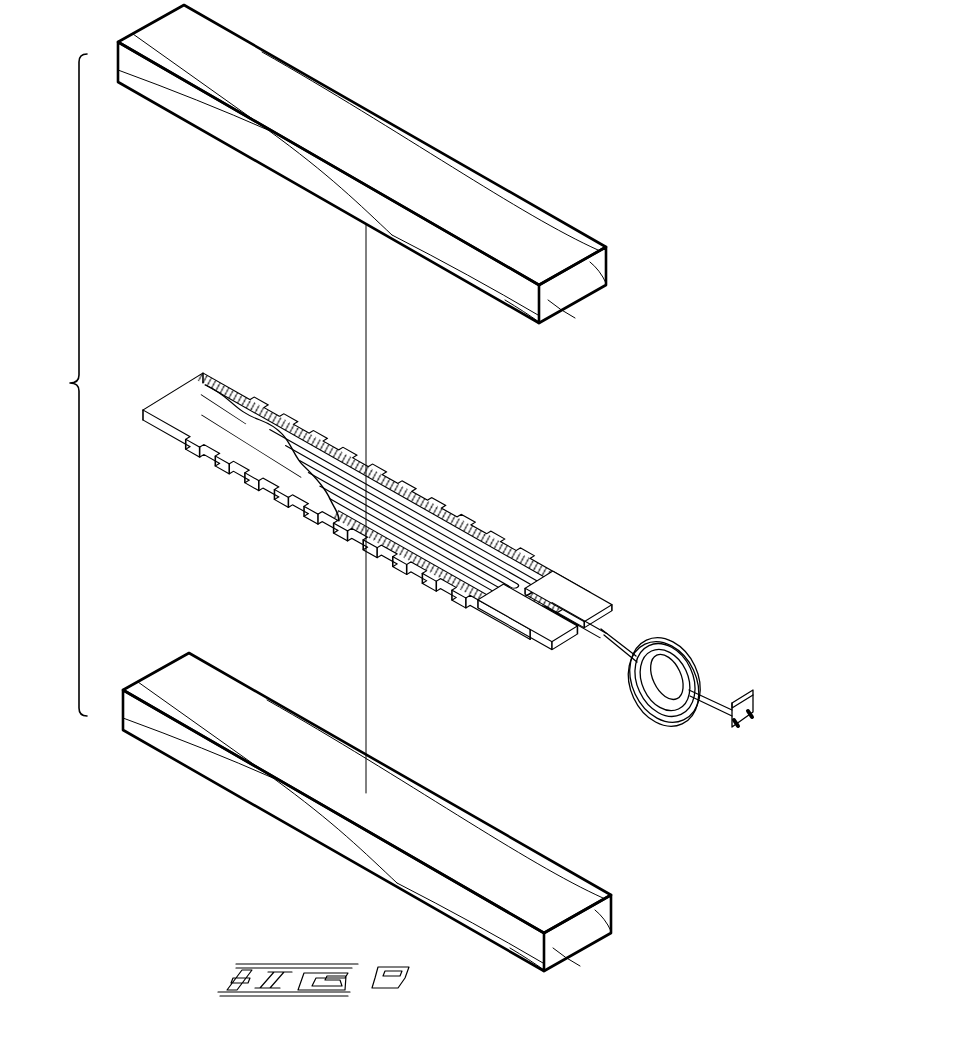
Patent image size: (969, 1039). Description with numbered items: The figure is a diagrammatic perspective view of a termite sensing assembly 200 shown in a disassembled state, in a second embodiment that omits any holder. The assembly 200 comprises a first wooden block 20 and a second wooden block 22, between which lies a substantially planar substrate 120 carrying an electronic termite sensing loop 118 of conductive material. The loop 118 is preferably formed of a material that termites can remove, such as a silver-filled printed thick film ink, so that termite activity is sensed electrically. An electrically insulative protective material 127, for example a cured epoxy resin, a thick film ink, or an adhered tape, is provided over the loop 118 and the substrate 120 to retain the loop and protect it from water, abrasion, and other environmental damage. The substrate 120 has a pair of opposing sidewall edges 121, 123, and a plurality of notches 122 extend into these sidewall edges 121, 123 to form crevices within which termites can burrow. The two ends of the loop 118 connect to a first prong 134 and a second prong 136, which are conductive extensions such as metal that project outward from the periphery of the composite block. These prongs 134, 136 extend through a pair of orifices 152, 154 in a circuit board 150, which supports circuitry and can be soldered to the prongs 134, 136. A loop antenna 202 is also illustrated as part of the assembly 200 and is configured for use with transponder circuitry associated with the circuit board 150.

The first wooden block 20 is at (378, 146).
The second wooden block 22 is at (284, 802).
The termite sensing assembly 200 is at (53, 385).
The substrate 120 is at (384, 526).
The notches 122 is at (298, 420).
The electrically insulative protective material 127 is at (212, 398).
The electronic termite sensing loop 118 is at (530, 568).
The sidewall edge 121 is at (598, 597).
The sidewall edge 123 is at (497, 628).
The first prong 134 is at (605, 630).
The second prong 136 is at (585, 633).
The loop antenna 202 is at (632, 696).
The circuit board 150 is at (787, 721).
The orifice 152 is at (740, 728).
The orifice 154 is at (757, 718).